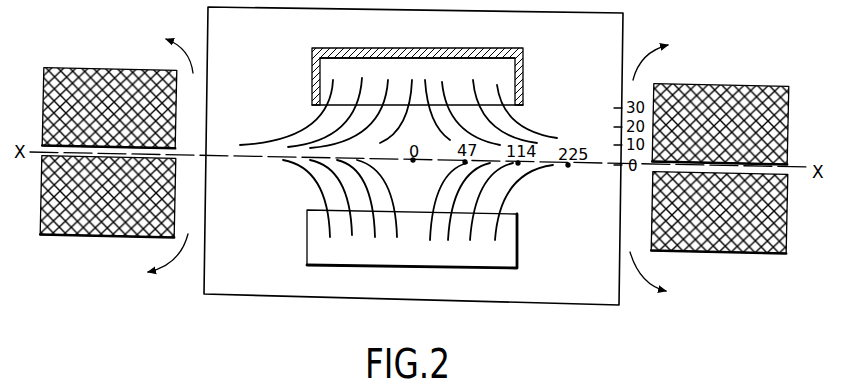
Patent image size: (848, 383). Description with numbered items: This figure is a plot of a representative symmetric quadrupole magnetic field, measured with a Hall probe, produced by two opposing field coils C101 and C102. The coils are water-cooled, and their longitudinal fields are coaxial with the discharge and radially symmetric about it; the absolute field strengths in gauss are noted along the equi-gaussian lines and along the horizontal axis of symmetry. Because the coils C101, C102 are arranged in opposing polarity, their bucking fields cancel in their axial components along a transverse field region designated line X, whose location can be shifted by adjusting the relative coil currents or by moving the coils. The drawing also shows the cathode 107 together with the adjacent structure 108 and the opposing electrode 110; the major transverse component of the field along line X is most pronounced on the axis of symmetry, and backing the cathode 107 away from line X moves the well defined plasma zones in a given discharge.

The cathode 107 is at (515, 85).
The upper electrode dielectric top 108 is at (462, 50).
The lower electrode 110 is at (440, 268).
The field coil C101 is at (720, 72).
The field coil C102 is at (723, 252).